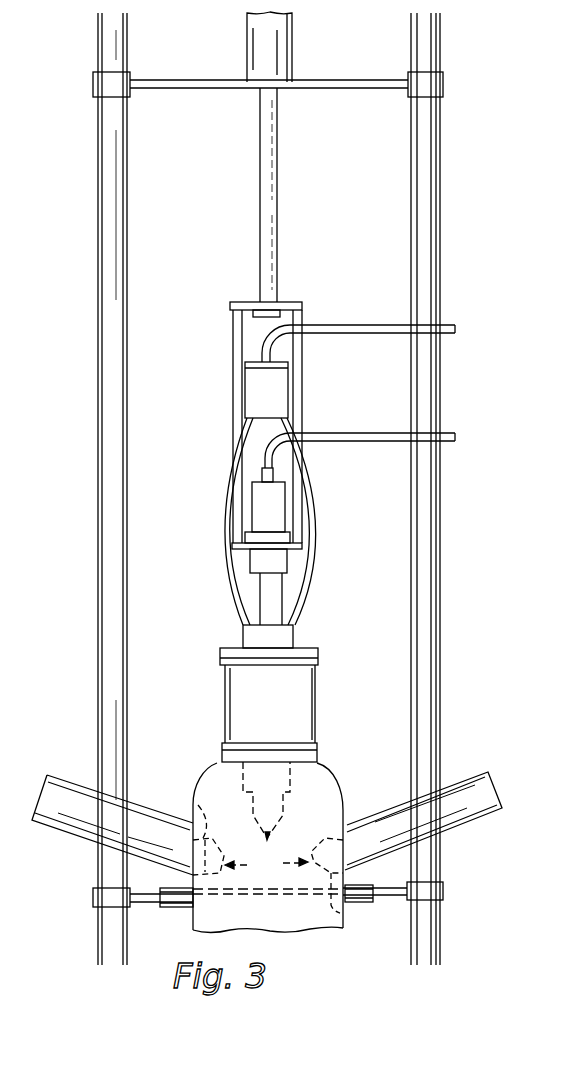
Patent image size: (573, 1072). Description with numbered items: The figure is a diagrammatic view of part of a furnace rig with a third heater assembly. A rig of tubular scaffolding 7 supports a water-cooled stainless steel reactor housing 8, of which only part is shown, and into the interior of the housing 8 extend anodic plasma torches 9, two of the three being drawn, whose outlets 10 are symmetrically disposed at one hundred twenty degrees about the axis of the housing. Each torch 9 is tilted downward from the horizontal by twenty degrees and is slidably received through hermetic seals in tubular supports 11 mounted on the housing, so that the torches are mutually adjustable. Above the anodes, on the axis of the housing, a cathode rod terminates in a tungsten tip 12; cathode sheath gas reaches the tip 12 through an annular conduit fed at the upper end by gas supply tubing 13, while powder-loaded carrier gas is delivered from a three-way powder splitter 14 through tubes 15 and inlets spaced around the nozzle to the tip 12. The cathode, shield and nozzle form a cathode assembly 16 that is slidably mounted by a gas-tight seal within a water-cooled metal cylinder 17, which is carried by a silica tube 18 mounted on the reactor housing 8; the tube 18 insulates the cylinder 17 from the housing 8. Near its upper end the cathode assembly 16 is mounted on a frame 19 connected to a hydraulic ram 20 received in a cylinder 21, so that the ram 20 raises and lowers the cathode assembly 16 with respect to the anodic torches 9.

The tubular scaffolding 7 is at (443, 927).
The reactor housing 8 is at (318, 767).
The anodic plasma torches 9 is at (198, 802).
The torch outlets 10 is at (266, 863).
The tubular supports 11 is at (63, 797).
The tungsten tip 12 is at (272, 836).
The gas supply tubing 13 is at (462, 437).
The three-way powder splitter 14 is at (260, 385).
The tubes 15 is at (222, 518).
The cathode assembly 16 is at (263, 832).
The water-cooled metal cylinder 17 is at (295, 633).
The silica tube 18 is at (235, 692).
The frame 19 is at (297, 493).
The hydraulic ram 20 is at (277, 247).
The cylinder 21 is at (293, 48).